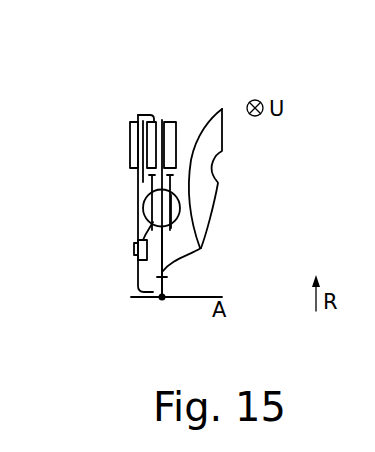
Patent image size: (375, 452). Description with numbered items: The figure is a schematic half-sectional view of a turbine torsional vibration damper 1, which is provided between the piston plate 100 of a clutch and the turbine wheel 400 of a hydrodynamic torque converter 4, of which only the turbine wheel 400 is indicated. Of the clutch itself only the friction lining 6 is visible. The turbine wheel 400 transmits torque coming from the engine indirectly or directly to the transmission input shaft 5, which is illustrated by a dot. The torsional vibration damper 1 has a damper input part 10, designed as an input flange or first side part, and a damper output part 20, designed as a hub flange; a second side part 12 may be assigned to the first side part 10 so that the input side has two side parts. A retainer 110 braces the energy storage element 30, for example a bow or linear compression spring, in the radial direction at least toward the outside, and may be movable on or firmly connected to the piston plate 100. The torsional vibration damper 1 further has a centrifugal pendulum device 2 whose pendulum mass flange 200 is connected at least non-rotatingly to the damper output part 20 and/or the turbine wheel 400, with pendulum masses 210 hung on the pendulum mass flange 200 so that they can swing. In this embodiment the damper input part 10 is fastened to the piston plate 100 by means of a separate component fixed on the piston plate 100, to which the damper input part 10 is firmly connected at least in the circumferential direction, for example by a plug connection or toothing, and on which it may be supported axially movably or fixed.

The torsional vibration damper 1 is at (174, 162).
The centrifugal pendulum device 2 is at (181, 121).
The hydrodynamic torque converter 4 is at (243, 174).
The transmission input shaft 5 is at (133, 297).
The friction lining 6 is at (133, 147).
The damper input part 10 is at (148, 202).
The second side part 12 is at (176, 202).
The damper output part 20 is at (139, 213).
The energy storage element 30 is at (176, 213).
The piston plate 100 is at (138, 175).
The retainer 110 is at (145, 185).
The pendulum mass flange 200 is at (163, 120).
The pendulum masses 210 is at (171, 137).
The turbine wheel 400 is at (223, 112).